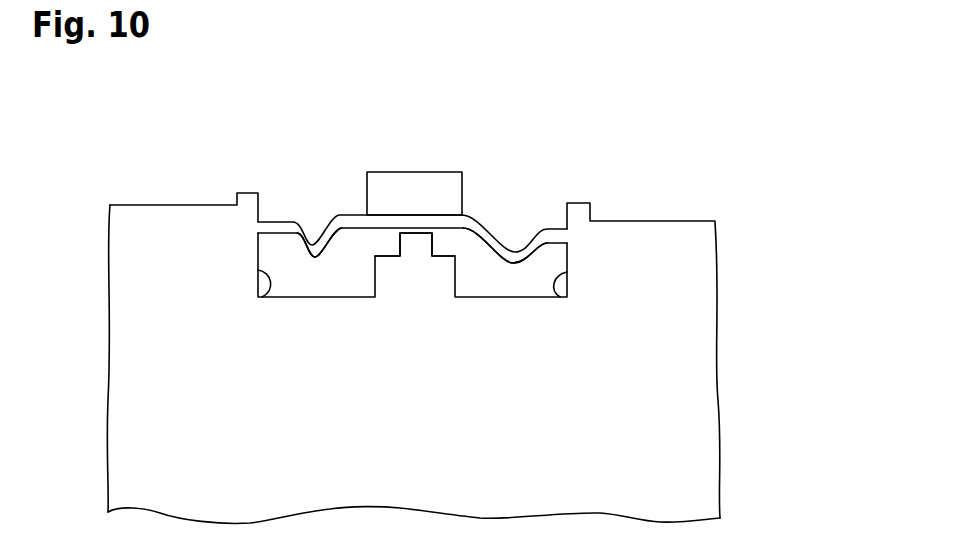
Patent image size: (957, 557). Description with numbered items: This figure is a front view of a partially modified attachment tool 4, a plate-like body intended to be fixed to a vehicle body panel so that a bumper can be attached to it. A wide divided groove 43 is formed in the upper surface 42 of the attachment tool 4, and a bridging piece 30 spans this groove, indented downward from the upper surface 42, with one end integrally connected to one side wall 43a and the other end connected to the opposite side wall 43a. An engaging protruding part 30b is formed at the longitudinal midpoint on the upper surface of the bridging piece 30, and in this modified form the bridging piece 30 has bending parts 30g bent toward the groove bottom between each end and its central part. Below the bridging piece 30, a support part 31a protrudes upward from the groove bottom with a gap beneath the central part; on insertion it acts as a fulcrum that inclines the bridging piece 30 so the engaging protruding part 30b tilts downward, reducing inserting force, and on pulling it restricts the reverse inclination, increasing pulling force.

The attachment tool 4 is at (680, 408).
The upper surface 42 is at (670, 221).
The bridging piece 30 is at (352, 213).
The engaging protruding part 30b is at (442, 188).
The bending part 30g is at (315, 258).
The divided groove 43 is at (295, 292).
The side wall 43a is at (262, 297).
The support part 31a is at (407, 268).